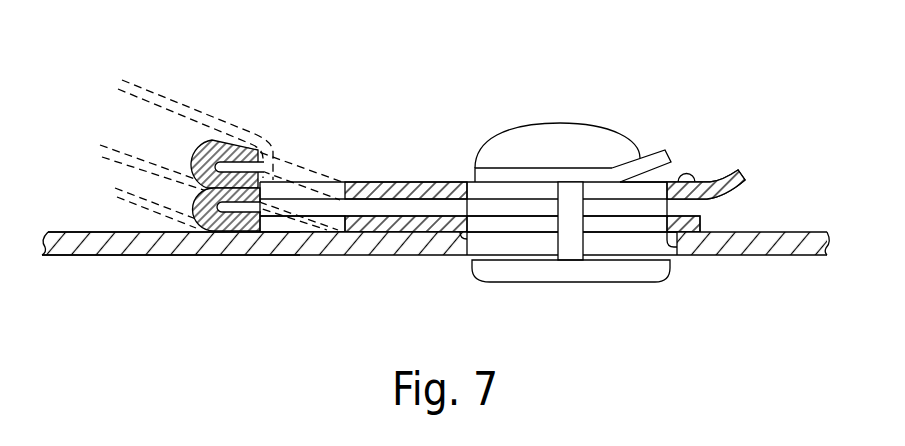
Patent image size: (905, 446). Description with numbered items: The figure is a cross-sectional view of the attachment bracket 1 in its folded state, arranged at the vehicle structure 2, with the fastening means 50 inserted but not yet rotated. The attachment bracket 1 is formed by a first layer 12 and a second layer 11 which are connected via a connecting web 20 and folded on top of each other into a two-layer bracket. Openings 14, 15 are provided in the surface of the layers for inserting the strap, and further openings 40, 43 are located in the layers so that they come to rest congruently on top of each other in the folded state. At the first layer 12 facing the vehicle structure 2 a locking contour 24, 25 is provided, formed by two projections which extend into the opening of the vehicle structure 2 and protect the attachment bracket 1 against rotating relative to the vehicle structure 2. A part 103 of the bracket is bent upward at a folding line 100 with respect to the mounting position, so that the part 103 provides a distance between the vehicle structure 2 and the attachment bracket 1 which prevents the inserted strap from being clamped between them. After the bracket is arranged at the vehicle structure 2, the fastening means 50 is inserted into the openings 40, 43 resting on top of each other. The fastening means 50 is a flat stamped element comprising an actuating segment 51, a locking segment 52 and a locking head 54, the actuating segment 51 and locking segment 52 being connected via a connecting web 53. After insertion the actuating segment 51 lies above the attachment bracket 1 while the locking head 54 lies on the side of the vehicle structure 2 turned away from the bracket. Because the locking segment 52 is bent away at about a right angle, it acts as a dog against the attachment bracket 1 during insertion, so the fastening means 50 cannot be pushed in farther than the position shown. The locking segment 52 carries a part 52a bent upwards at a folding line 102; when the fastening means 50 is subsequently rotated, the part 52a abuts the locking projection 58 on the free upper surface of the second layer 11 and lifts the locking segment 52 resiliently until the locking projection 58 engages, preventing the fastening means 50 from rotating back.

The attachment bracket 1 is at (479, 190).
The vehicle structure 2 is at (267, 247).
The second layer 11 is at (393, 190).
The first layer 12 is at (362, 224).
The opening 14 is at (287, 188).
The opening 15 is at (323, 226).
The connecting web 20 is at (435, 266).
The locking contour 24 is at (677, 244).
The locking contour 25 is at (460, 252).
The opening 40 is at (614, 225).
The opening 43 is at (687, 180).
The fastening means 50 is at (607, 184).
The actuating segment 51 is at (568, 130).
The locking segment 52 is at (496, 165).
The part bent upwards 52a is at (666, 181).
The connecting web 53 is at (567, 208).
The locking head 54 is at (555, 272).
The locking projection 58 is at (697, 182).
The folding line 100 is at (479, 190).
The folding line 102 is at (621, 160).
The part 103 is at (212, 140).